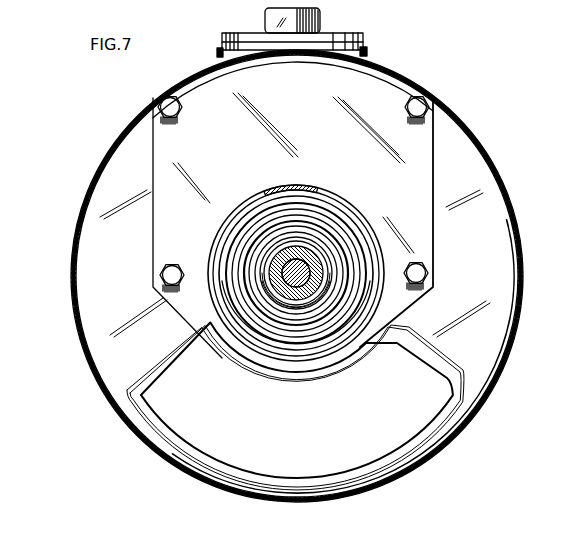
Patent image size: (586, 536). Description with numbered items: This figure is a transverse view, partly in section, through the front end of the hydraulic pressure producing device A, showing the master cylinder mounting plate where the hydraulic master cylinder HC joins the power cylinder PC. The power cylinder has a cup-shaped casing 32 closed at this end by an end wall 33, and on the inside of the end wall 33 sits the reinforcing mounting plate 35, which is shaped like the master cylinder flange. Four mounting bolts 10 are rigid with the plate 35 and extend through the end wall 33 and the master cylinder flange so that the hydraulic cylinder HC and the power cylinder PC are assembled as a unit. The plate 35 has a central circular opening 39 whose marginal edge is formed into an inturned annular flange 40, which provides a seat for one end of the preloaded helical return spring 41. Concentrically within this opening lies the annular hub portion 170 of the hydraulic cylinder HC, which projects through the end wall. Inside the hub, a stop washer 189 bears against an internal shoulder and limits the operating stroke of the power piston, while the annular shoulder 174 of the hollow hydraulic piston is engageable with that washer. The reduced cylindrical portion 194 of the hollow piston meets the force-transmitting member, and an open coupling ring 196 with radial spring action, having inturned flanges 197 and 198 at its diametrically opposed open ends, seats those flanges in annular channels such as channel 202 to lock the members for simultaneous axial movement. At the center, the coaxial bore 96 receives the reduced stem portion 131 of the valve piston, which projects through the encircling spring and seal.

The mounting bolts 10 is at (421, 101).
The cup-shaped casing 32 is at (509, 234).
The end wall 33 is at (473, 356).
The reinforcing mounting plate 35 is at (420, 137).
The central circular opening 39 is at (363, 253).
The inturned annular flange 40 is at (343, 240).
The return spring 41 is at (318, 192).
The coaxial bore 96 is at (277, 266).
The reduced stem portion 131 is at (268, 318).
The annular hub portion 170 is at (345, 298).
The annular shoulder 174 is at (317, 230).
The stop washer 189 is at (350, 325).
The reduced cylindrical portion 194 is at (305, 300).
The open coupling ring 196 is at (267, 257).
The inturned flange 197 is at (290, 245).
The inturned flange 198 is at (277, 297).
The annular channel 202 is at (327, 270).
The hydraulic master cylinder HC is at (374, 51).
The power cylinder PC is at (82, 185).
The hydraulic pressure producing device A is at (86, 401).